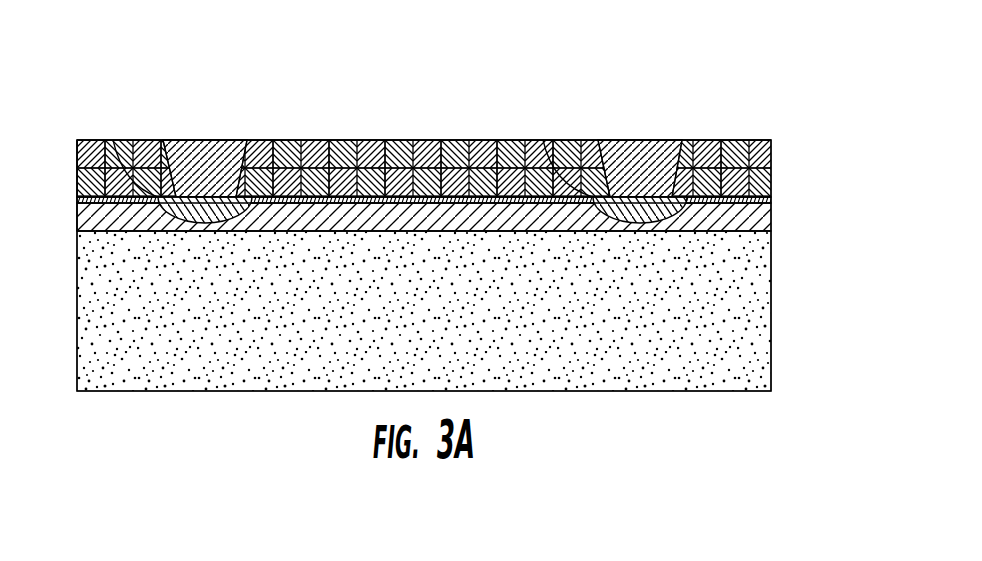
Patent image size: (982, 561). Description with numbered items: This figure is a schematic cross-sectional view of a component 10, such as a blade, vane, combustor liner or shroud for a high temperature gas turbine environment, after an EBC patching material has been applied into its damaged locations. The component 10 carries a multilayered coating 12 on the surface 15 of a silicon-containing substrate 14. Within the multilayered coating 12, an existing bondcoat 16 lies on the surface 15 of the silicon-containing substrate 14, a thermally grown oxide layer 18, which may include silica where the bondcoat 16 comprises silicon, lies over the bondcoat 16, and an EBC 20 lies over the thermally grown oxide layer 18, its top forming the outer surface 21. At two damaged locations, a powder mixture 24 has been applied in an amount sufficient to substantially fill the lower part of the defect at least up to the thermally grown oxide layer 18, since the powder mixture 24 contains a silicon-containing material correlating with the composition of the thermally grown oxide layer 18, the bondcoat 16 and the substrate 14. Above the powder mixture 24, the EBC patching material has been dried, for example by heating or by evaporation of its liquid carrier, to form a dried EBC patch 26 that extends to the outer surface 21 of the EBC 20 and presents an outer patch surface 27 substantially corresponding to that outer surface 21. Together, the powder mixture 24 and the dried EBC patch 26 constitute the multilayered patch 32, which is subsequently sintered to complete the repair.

The component 10 is at (766, 97).
The multilayered coating 12 is at (70, 140).
The silicon-containing substrate 14 is at (771, 345).
The surface 15 is at (426, 225).
The bondcoat 16 is at (771, 215).
The thermally grown oxide layer 18 is at (771, 200).
The EBC 20 is at (771, 158).
The outer surface 21 is at (388, 135).
The powder mixture 24 is at (113, 140).
The dried EBC patch 26 is at (227, 140).
The outer patch surface 27 is at (188, 140).
The multilayered patch 32 is at (227, 85).